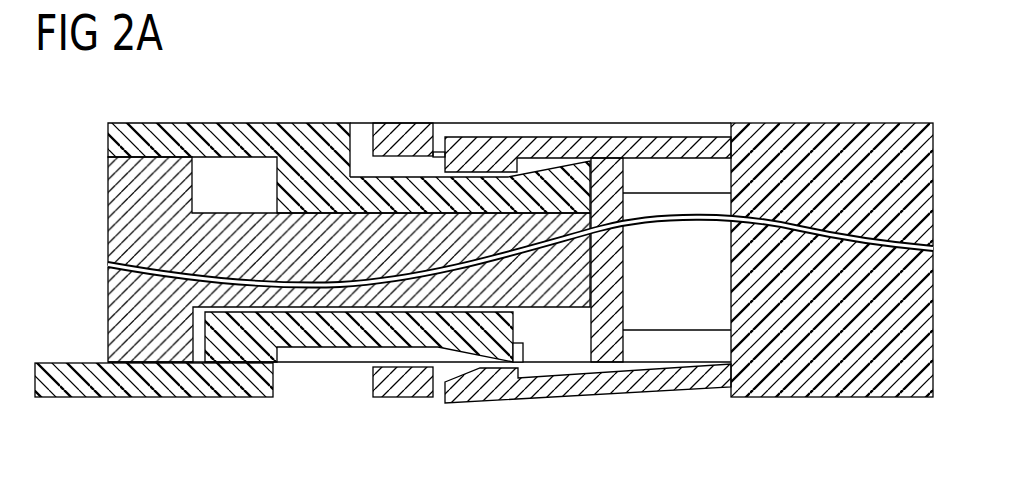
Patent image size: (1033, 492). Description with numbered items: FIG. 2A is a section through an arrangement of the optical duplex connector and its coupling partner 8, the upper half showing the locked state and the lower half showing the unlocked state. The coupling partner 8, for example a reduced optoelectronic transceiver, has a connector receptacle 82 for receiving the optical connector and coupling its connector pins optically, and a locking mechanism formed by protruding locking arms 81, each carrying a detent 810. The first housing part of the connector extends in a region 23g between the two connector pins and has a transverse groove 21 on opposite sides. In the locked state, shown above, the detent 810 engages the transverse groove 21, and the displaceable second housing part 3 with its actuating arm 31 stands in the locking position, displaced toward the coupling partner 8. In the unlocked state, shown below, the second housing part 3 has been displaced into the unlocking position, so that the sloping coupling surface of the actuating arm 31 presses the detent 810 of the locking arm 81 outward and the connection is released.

The second housing part 3 is at (292, 137).
The coupling partner 8 is at (847, 135).
The transverse groove 21 is at (445, 170).
The region of the first housing part 23g is at (127, 202).
The actuating arm 31 is at (565, 175).
The locking arm 81 is at (608, 153).
The connector receptacle 82 is at (684, 207).
The detent 810 is at (503, 168).